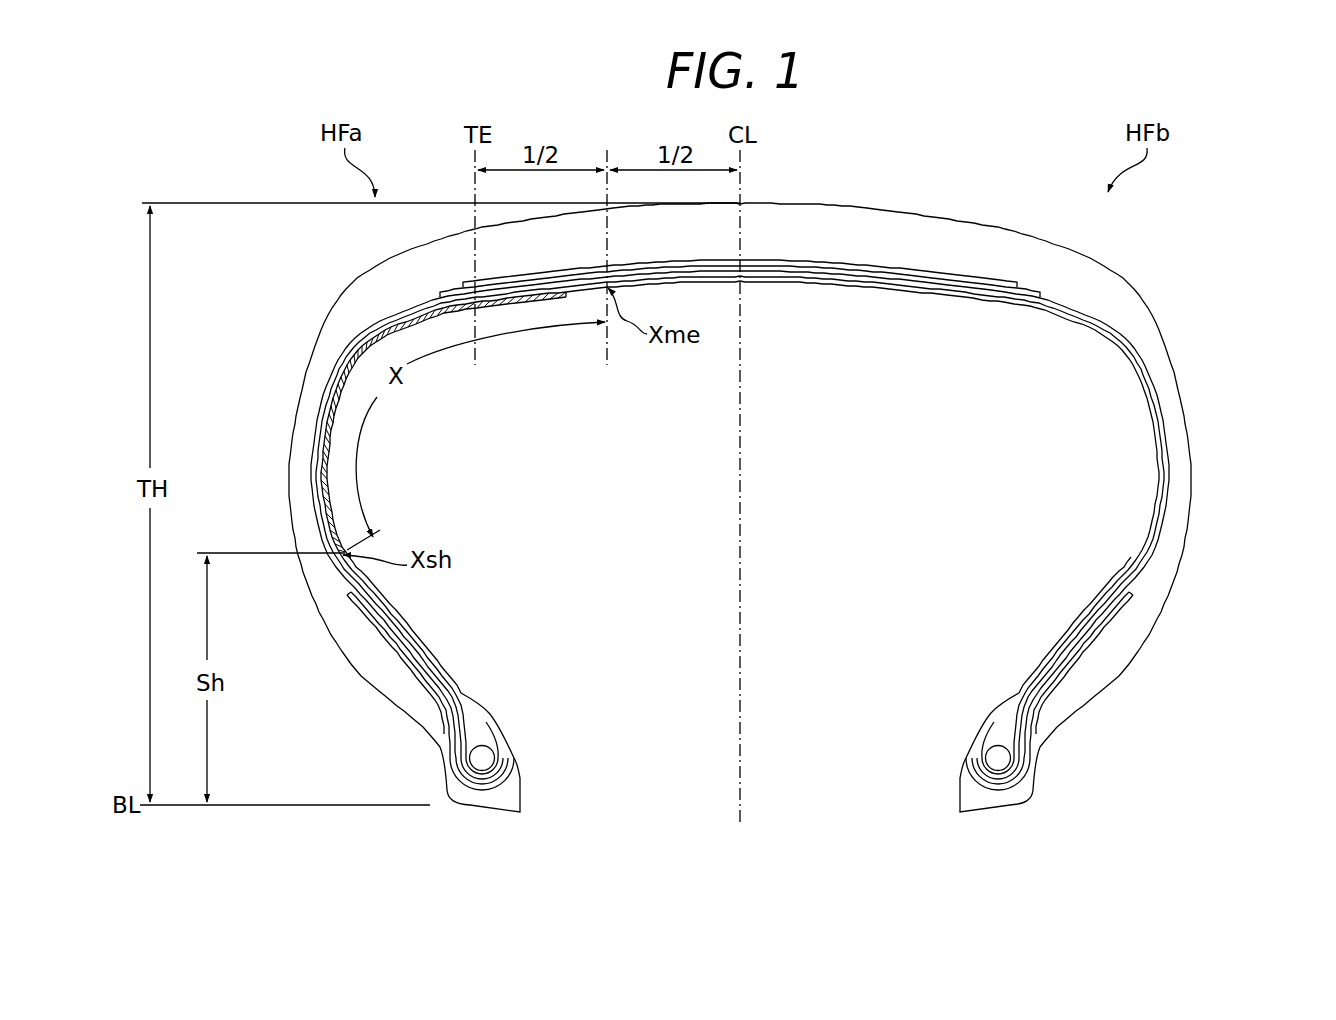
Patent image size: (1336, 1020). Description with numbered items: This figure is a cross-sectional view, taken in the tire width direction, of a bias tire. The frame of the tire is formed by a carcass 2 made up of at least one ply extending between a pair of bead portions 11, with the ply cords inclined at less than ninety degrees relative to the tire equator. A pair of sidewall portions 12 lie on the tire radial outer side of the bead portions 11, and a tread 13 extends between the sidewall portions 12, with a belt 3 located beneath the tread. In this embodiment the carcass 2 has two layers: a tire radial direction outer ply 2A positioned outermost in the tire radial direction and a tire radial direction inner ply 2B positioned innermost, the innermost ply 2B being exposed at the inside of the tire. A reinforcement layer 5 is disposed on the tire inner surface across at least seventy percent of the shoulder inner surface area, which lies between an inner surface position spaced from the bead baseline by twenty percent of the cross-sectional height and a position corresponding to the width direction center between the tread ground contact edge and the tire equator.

The tread 13 is at (863, 197).
The sidewall portion 12 is at (282, 483).
The bead portion 11 is at (402, 728).
The belt 3 is at (1022, 283).
The carcass 2 is at (740, 514).
The tire radial direction outer ply 2A is at (402, 632).
The tire radial direction inner ply 2B is at (432, 657).
The reinforcement layer 5 is at (404, 326).